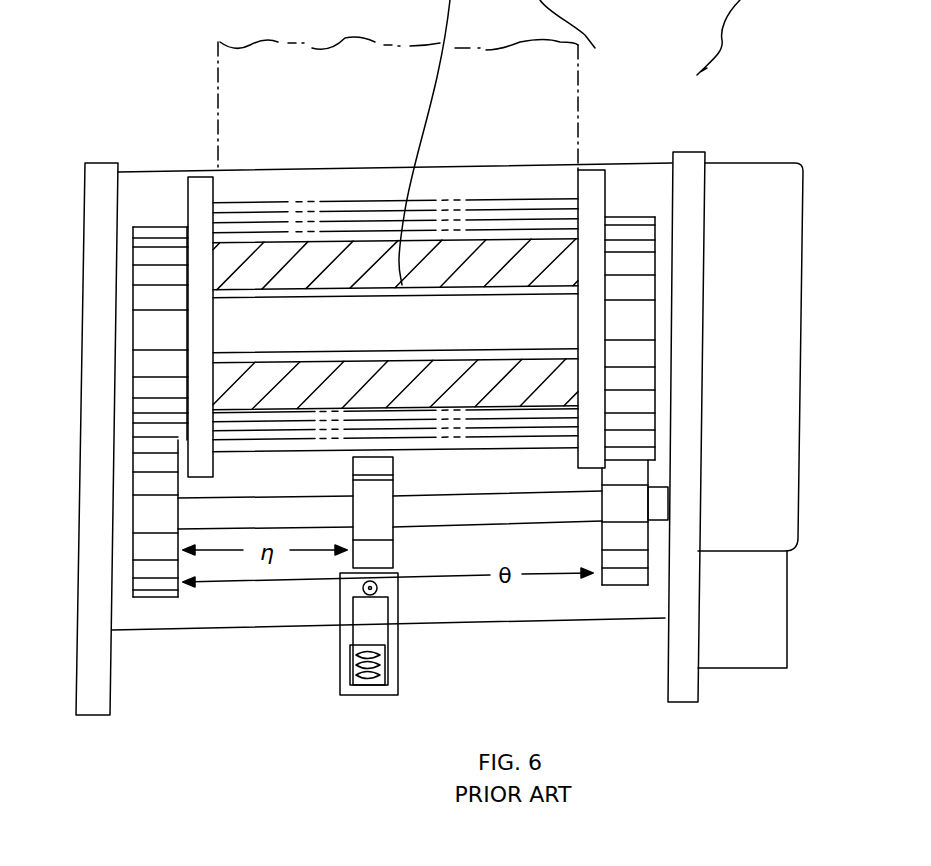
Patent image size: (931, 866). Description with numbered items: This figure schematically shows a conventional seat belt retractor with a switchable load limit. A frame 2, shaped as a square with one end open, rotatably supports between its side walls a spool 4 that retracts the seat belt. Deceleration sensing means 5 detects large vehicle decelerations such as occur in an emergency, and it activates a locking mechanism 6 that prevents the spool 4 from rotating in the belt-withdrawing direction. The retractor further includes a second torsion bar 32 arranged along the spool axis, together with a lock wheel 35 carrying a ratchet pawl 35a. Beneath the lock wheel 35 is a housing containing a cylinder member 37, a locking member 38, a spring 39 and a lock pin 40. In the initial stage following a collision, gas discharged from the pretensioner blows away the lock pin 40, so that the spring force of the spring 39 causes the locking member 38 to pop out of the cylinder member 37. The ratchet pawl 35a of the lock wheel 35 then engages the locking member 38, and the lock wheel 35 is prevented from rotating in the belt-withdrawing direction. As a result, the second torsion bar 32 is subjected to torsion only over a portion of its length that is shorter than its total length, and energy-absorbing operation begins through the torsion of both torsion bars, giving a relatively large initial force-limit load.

The frame 2 is at (668, 680).
The spool 4 is at (505, 252).
The deceleration sensing means 5 is at (785, 648).
The locking mechanism 6 is at (793, 160).
The second torsion bar 32 is at (447, 510).
The lock wheel 35 is at (353, 490).
The ratchet pawl 35a is at (393, 548).
The cylinder member 37 is at (372, 632).
The locking member 38 is at (375, 634).
The spring 39 is at (368, 672).
The lock pin 40 is at (358, 590).